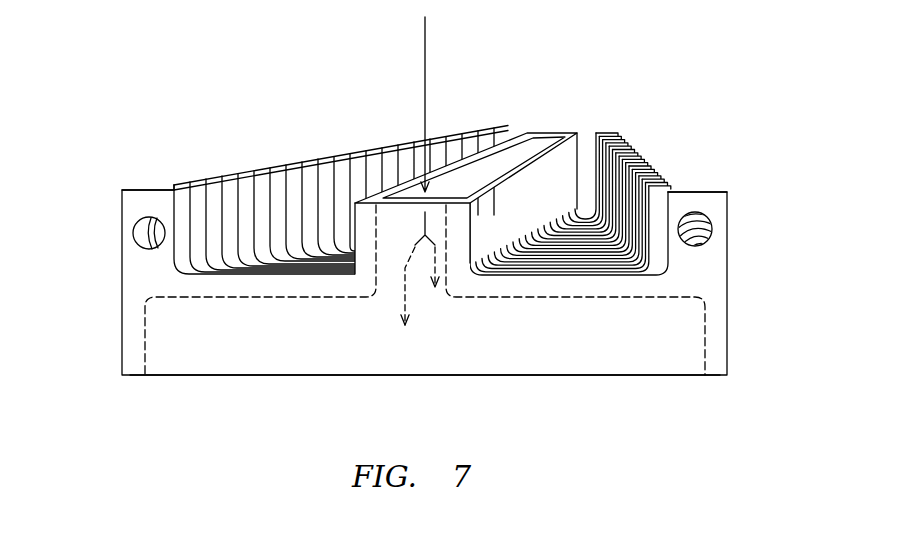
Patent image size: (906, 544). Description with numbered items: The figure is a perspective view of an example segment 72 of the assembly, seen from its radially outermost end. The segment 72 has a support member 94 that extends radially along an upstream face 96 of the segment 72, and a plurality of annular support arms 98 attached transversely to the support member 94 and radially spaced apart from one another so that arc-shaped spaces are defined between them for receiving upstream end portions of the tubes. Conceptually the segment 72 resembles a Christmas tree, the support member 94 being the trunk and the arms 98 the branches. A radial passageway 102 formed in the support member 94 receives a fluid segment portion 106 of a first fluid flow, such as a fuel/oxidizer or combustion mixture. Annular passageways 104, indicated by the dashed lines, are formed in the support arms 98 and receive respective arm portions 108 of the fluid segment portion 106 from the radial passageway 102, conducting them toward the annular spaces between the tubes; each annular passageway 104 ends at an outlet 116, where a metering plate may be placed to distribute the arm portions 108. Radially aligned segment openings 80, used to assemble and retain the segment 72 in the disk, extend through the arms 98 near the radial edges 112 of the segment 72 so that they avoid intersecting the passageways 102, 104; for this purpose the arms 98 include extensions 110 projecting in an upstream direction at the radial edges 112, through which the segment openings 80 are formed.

The segment 72 is at (732, 95).
The segment opening 80 is at (138, 230).
The support member 94 is at (543, 133).
The upstream face 96 is at (300, 152).
The annular support arm 98 is at (692, 275).
The radial passageway 102 is at (403, 224).
The annular passageway 104 is at (547, 352).
The fluid segment portion 106 is at (426, 59).
The arm portion 108 is at (435, 258).
The extension 110 is at (130, 190).
The radial edge 112 is at (115, 265).
The outlet 116 is at (270, 377).